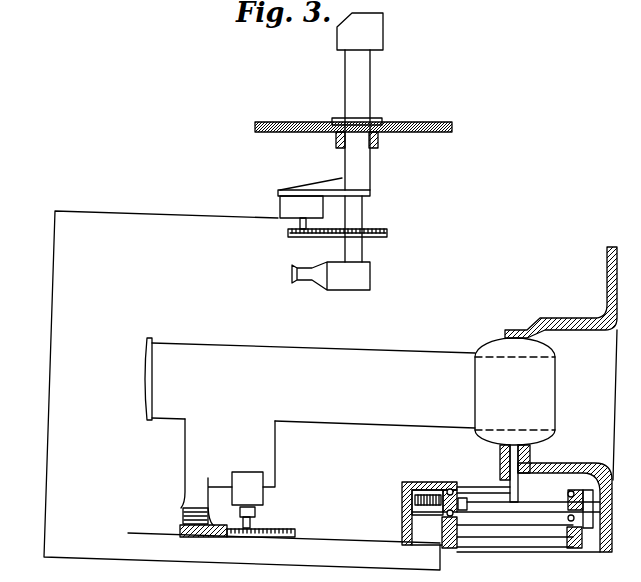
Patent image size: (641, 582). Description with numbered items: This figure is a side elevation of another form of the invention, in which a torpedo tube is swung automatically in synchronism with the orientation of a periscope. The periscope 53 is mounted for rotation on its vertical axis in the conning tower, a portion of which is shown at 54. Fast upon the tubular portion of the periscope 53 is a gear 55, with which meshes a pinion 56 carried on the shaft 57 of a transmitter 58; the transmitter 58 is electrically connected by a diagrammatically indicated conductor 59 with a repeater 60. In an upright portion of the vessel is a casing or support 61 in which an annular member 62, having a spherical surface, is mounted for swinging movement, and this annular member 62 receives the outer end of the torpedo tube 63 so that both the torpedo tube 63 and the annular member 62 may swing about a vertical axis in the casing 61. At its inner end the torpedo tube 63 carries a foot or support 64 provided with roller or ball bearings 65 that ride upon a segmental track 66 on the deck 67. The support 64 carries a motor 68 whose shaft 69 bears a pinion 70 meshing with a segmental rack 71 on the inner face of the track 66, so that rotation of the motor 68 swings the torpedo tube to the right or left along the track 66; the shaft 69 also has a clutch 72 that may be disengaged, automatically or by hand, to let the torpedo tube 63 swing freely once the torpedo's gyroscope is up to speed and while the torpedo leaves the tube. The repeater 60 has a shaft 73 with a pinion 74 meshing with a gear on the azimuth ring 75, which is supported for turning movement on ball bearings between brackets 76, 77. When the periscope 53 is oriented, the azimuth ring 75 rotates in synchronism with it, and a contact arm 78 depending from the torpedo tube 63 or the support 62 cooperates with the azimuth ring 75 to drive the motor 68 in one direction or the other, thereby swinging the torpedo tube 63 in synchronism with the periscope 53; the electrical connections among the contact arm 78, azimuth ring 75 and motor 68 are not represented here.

The periscope 53 is at (363, 72).
The conning tower portion 54 is at (421, 128).
The gear 55 is at (377, 230).
The pinion 56 is at (294, 238).
The shaft 57 is at (300, 225).
The transmitter 58 is at (280, 204).
The conductor 59 is at (52, 275).
The repeater 60 is at (418, 530).
The casing or support 61 is at (545, 321).
The annular member 62 is at (540, 356).
The torpedo tube 63 is at (293, 352).
The foot or support 64 is at (195, 450).
The roller or ball bearings 65 is at (183, 513).
The segmental track 66 is at (180, 528).
The deck 67 is at (348, 539).
The motor 68 is at (257, 495).
The shaft 69 is at (257, 509).
The pinion 70 is at (295, 532).
The segmental rack 71 is at (225, 501).
The clutch 72 is at (255, 518).
The shaft 73 is at (412, 510).
The pinion 74 is at (428, 495).
The azimuth ring 75 is at (567, 512).
The bracket 76 is at (442, 468).
The bracket 77 is at (452, 522).
The contact arm 78 is at (512, 505).